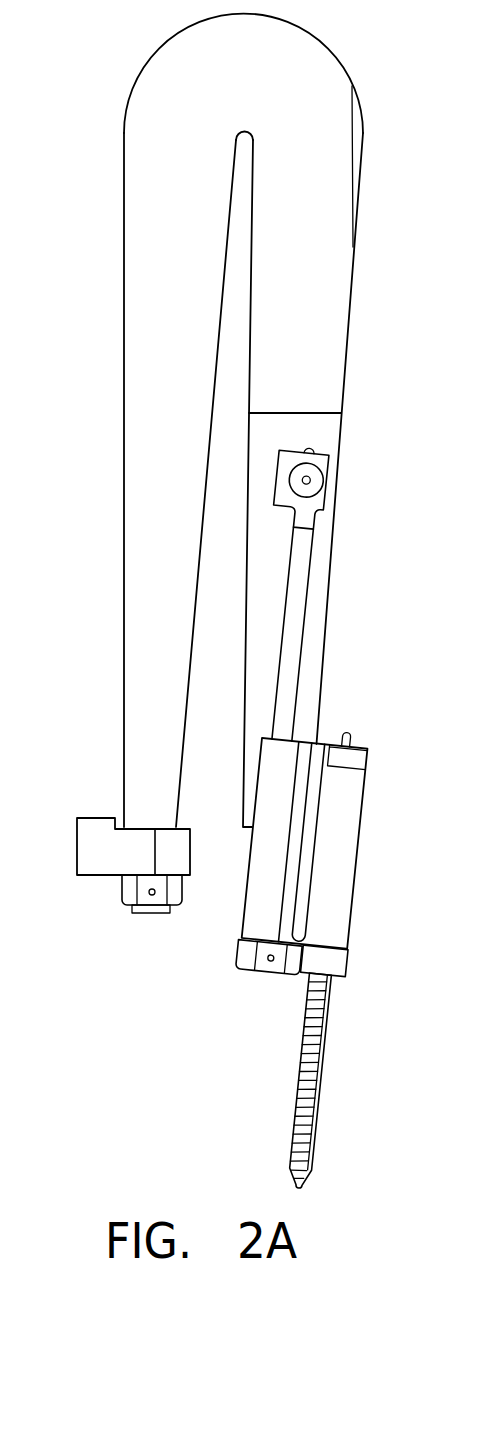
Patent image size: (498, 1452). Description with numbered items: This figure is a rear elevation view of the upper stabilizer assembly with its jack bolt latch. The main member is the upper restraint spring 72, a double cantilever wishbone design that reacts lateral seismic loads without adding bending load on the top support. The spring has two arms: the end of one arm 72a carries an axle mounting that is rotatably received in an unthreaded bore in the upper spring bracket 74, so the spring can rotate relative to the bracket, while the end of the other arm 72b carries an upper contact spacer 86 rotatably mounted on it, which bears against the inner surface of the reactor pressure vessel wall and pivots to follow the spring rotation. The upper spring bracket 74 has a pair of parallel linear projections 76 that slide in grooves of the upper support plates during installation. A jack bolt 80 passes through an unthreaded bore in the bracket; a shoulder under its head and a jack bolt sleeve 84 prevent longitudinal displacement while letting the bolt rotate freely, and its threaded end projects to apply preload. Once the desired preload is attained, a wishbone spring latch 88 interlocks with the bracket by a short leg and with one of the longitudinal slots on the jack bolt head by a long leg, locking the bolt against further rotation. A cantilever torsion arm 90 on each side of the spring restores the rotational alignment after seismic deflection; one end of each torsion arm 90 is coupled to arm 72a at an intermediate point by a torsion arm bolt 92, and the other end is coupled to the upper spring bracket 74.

The upper restraint spring 72 is at (322, 144).
The arm of spring 72a is at (308, 708).
The other arm of spring 72b is at (123, 655).
The upper spring bracket 74 is at (365, 785).
The parallel linear projections 76 is at (312, 827).
The jack bolt 80 is at (323, 1093).
The jack bolt sleeve 84 is at (347, 965).
The upper contact spacer 86 is at (100, 863).
The wishbone spring latch 88 is at (347, 731).
The cantilever torsion arm 90 is at (302, 578).
The torsion arm bolt 92 is at (318, 482).